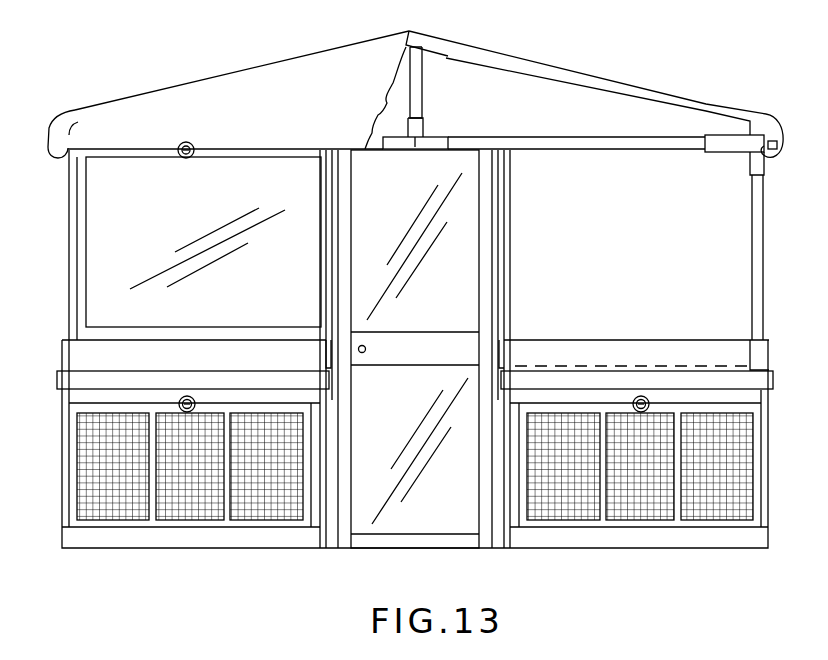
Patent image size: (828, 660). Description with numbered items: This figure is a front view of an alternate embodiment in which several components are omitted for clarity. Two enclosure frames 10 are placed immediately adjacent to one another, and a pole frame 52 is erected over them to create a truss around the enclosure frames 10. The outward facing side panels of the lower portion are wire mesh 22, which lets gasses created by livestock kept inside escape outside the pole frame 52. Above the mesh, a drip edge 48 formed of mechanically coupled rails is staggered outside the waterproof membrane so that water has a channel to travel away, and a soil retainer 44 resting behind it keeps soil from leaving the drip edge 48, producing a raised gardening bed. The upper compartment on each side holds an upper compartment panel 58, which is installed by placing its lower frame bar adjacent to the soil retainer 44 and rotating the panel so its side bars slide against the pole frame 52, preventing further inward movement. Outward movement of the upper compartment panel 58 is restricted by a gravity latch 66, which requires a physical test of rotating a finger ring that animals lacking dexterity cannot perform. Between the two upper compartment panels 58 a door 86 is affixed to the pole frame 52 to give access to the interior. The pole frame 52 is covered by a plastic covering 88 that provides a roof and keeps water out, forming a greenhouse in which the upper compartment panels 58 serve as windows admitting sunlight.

The enclosure frame 10 is at (68, 494).
The wire mesh 22 is at (83, 443).
The soil retainer 44 is at (77, 345).
The drip edge 48 is at (55, 379).
The pole frame 52 is at (694, 101).
The upper compartment panel 58 is at (74, 241).
The gravity latch 66 is at (200, 144).
The door 86 is at (474, 251).
The plastic covering 88 is at (163, 104).